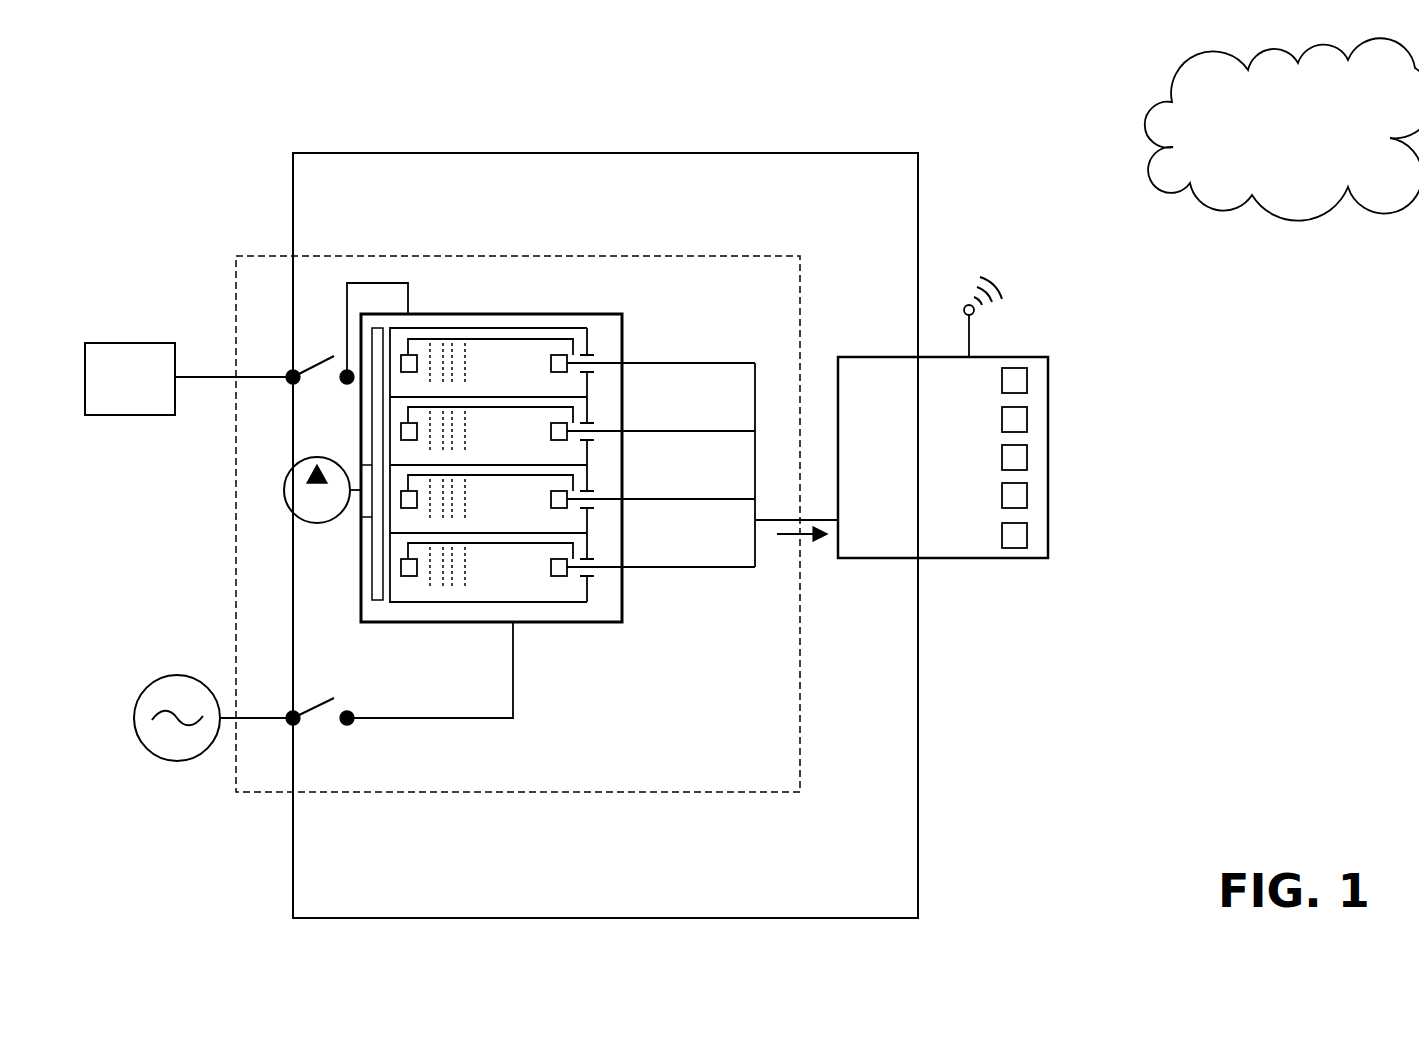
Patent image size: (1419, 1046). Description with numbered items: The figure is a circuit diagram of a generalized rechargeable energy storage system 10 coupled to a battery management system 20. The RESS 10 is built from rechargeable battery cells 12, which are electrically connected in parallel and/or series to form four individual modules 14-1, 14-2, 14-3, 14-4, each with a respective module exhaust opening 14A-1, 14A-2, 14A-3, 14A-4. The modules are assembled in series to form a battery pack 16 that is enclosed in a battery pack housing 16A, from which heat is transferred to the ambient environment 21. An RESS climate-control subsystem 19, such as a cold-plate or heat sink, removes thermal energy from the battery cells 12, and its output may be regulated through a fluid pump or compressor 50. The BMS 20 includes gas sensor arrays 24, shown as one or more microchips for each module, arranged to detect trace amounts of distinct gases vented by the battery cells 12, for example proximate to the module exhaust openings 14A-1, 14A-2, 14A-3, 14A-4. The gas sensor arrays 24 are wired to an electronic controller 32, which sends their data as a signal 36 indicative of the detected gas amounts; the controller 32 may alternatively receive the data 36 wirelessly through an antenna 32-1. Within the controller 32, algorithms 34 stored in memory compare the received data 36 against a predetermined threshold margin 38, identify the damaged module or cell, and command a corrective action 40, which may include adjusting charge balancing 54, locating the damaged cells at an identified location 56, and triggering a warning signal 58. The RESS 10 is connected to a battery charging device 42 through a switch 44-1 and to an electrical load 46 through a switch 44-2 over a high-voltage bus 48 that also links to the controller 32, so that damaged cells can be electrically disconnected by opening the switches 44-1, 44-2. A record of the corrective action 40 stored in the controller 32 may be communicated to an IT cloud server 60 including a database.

The rechargeable energy storage system 10 is at (1017, 108).
The rechargeable battery cell 12 is at (435, 343).
The battery module 14-1 is at (490, 359).
The battery module 14-2 is at (490, 427).
The battery module 14-3 is at (490, 495).
The battery module 14-4 is at (490, 563).
The module exhaust opening 14A-1 is at (590, 352).
The module exhaust opening 14A-2 is at (590, 422).
The module exhaust opening 14A-3 is at (590, 490).
The module exhaust opening 14A-4 is at (590, 558).
The battery pack 16 is at (242, 238).
The battery pack housing 16A is at (536, 792).
The RESS climate-control subsystem 19 is at (372, 575).
The battery management system 20 is at (956, 577).
The ambient environment 21 is at (1118, 603).
The gas sensor array 24 is at (400, 365).
The electronic controller 32 is at (1030, 357).
The antenna 32-1 is at (968, 345).
The algorithm 34 is at (1027, 380).
The data signal 36 is at (792, 538).
The threshold margin 38 is at (1027, 420).
The corrective action 40 is at (1027, 458).
The battery charging device 42 is at (189, 379).
The switch 44-1 is at (330, 357).
The switch 44-2 is at (322, 703).
The electrical load 46 is at (177, 761).
The high-voltage BUS 48 is at (722, 918).
The fluid pump or compressor 50 is at (284, 490).
The charge balancing 54 is at (1027, 496).
The location 56 is at (472, 348).
The warning signal 58 is at (1027, 535).
The IT cloud server 60 is at (1282, 129).